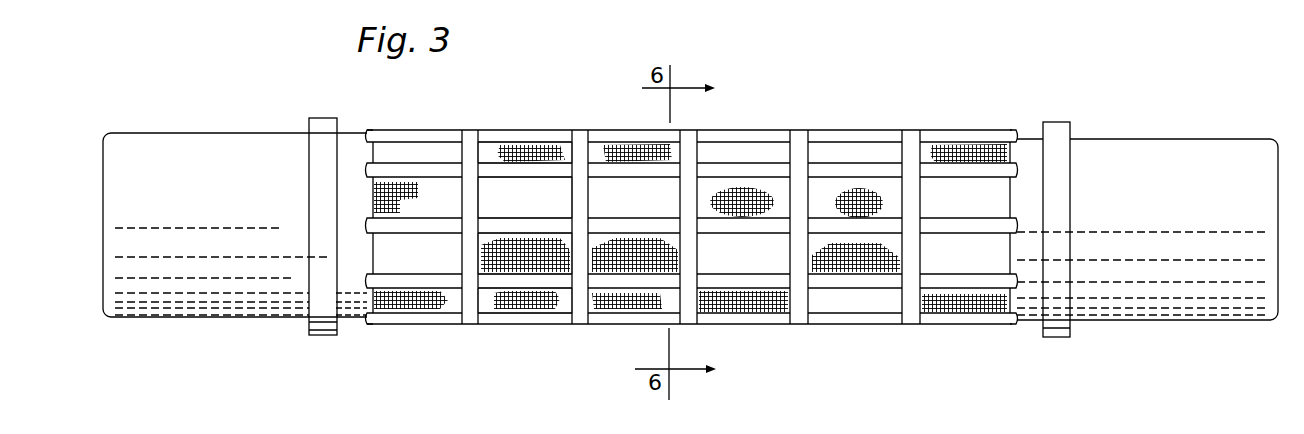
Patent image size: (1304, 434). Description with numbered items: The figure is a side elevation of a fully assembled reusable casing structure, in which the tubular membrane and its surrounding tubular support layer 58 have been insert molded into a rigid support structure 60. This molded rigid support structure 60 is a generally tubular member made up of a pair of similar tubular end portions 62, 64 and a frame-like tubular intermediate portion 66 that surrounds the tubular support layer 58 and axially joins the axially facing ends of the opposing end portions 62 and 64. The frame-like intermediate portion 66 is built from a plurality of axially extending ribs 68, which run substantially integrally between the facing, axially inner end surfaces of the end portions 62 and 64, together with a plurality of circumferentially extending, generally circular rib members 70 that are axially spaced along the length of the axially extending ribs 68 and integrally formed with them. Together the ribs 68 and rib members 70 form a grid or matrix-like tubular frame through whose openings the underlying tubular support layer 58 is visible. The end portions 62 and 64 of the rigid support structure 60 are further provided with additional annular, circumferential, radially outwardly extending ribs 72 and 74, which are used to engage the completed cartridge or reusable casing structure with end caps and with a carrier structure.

The tubular support layer 58 is at (492, 297).
The rigid support structure 60 is at (770, 112).
The tubular end portion 62 is at (1183, 139).
The tubular end portion 64 is at (190, 133).
The frame-like tubular intermediate portion 66 is at (904, 337).
The axially extending ribs 68 is at (860, 175).
The circumferentially extending circular rib members 70 is at (578, 133).
The annular circumferential radially outwardly extending rib 72 is at (1056, 122).
The annular circumferential radially outwardly extending rib 74 is at (322, 118).